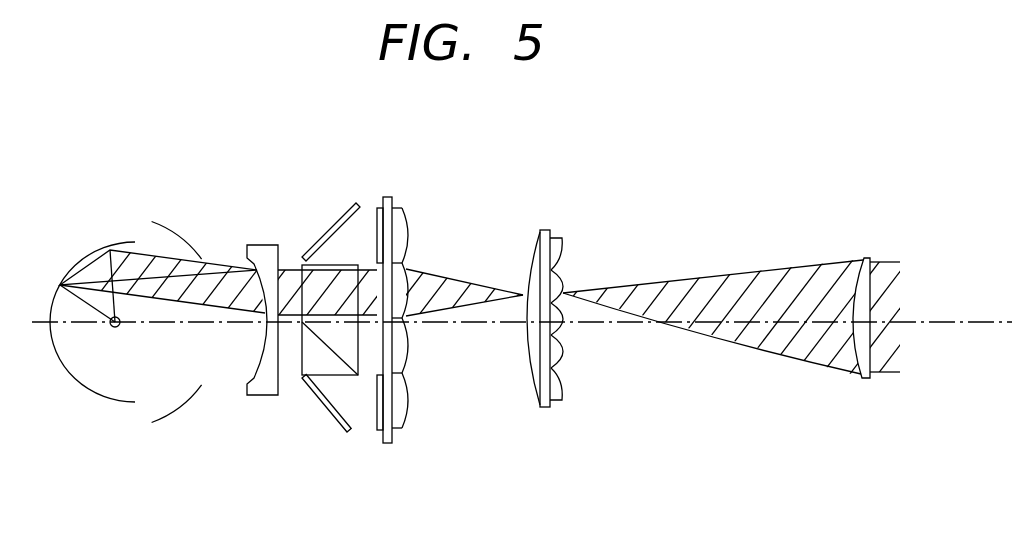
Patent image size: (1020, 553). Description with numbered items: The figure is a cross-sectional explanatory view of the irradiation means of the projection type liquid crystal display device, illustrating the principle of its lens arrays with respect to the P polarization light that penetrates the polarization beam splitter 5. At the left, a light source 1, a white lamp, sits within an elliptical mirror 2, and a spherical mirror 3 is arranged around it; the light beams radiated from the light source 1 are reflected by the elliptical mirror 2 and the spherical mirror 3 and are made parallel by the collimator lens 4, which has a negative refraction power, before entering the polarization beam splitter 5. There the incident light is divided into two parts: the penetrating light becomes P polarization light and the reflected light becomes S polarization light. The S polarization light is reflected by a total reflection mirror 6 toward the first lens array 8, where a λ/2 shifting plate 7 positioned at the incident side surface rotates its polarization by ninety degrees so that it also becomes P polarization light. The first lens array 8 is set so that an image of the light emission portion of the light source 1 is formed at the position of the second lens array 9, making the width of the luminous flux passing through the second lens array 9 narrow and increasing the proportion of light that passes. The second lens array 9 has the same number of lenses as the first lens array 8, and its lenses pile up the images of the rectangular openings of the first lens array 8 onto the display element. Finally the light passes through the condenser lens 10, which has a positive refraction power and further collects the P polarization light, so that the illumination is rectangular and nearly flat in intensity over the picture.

The light source 1 is at (116, 328).
The elliptical mirror 2 is at (78, 377).
The spherical mirror 3 is at (180, 234).
The collimator lens 4 is at (262, 396).
The polarization beam splitter 5 is at (345, 377).
The total reflection mirror 6 is at (321, 240).
The λ/2 shifting plate 7 is at (377, 207).
The first lens array 8 is at (390, 197).
The second lens array 9 is at (547, 229).
The condenser lens 10 is at (866, 257).